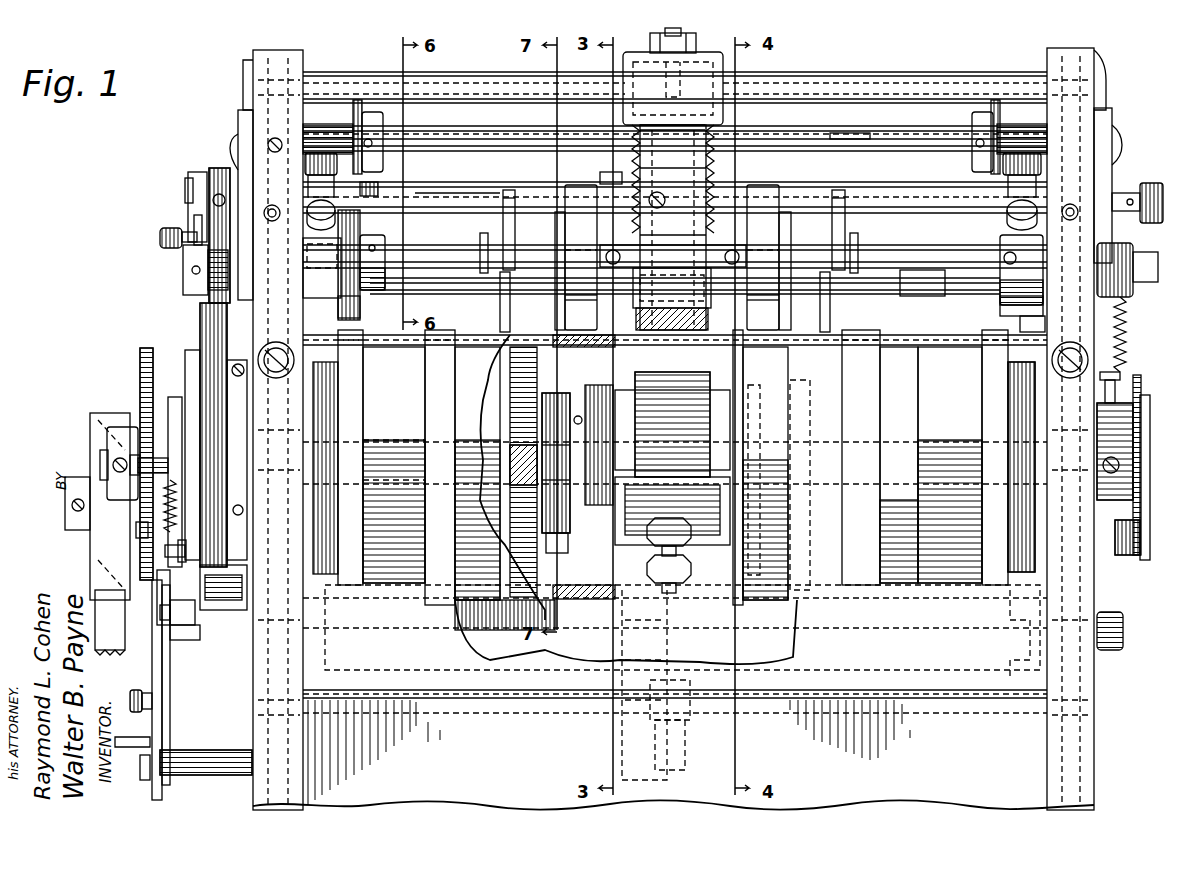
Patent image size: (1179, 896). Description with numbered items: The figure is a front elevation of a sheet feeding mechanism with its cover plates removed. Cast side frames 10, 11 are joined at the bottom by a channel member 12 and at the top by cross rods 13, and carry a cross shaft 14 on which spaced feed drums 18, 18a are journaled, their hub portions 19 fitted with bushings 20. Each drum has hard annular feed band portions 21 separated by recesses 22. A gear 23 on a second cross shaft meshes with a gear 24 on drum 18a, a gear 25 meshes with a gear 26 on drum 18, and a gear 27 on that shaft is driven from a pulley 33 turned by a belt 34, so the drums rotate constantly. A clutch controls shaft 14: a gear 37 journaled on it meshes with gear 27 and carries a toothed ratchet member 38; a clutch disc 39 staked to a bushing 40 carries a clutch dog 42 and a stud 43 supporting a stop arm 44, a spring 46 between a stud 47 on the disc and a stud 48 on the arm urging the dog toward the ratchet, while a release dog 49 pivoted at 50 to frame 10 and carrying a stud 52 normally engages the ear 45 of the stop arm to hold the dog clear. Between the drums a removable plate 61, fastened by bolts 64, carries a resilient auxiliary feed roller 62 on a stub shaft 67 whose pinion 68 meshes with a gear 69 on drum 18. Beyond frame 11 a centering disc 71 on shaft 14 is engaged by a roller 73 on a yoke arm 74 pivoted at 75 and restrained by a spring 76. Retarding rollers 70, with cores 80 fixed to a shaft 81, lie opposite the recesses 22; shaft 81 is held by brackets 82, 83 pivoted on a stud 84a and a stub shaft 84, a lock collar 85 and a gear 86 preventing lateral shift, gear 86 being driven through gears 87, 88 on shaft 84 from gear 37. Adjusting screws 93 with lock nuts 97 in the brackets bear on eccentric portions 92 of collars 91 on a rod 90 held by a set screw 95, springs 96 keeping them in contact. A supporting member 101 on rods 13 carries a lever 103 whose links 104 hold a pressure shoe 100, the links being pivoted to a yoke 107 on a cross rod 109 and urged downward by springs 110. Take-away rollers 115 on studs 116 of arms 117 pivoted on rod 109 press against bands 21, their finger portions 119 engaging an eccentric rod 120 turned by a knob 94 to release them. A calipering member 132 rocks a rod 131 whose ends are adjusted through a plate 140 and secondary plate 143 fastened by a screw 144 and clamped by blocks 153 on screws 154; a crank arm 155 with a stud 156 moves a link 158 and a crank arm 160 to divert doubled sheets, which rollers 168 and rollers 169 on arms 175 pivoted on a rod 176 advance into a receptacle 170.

The side frame 10 is at (253, 62).
The side frame 11 is at (1088, 52).
The channel member 12 is at (673, 726).
The cross rods 13 is at (850, 73).
The cross shaft 14 is at (502, 440).
The feed member 18 is at (394, 465).
The feed member 18a is at (923, 465).
The hub portions 19 is at (800, 412).
The bushings 20 is at (352, 442).
The feed band portions 21 is at (355, 332).
The recesses 22 is at (472, 333).
The gear 23 is at (1010, 638).
The gear 24 is at (1038, 558).
The gear 25 is at (338, 648).
The gear 26 is at (340, 376).
The gear 27 is at (223, 587).
The pulley 33 is at (95, 420).
The belt 34 is at (107, 645).
The gear 37 is at (190, 370).
The toothed ratchet member 38 is at (175, 398).
The clutch disc 39 is at (145, 350).
The bushing 40 is at (118, 428).
The clutch dog 42 is at (239, 460).
The stud 43 is at (136, 530).
The clutch stop arm 44 is at (151, 597).
The ear 45 is at (170, 612).
The spring 46 is at (180, 562).
The stud 47 is at (160, 468).
The stud 48 is at (110, 622).
The clutch release dog 49 is at (170, 648).
The pivot 50 is at (170, 638).
The stud 52 is at (137, 692).
The removable plate 61 is at (708, 542).
The auxiliary friction feed roller 62 is at (648, 397).
The bolts 64 is at (655, 552).
The stub shaft 67 is at (605, 390).
The pinion 68 is at (560, 393).
The gear 69 is at (568, 527).
The retarding rollers 70 is at (672, 257).
The centering disc 71 is at (1133, 500).
The roller 73 is at (1125, 558).
The yoke arm 74 is at (1150, 510).
The pivot 75 is at (1130, 404).
The spring 76 is at (1124, 330).
The cores 80 is at (557, 232).
The shaft 81 is at (902, 246).
The adjustable bracket 82 is at (1003, 300).
The adjustable bracket 83 is at (322, 268).
The stub shaft 84 is at (400, 282).
The stud 84a is at (1027, 322).
The lock collar 85 is at (998, 232).
The gear 86 is at (386, 232).
The gear 87 is at (362, 302).
The gear 88 is at (215, 168).
The rod 90 is at (890, 130).
The collars 91 is at (385, 126).
The eccentric portions 92 is at (312, 126).
The adjusting screws 93 is at (310, 228).
The knob 94 is at (1150, 182).
The set screw 95 is at (268, 142).
The spring 96 is at (358, 104).
The lock nuts 97 is at (370, 186).
The shoe 100 is at (686, 320).
The supporting member 101 is at (724, 66).
The lever 103 is at (740, 112).
The links 104 is at (630, 165).
The yoke member 107 is at (673, 276).
The cross rod 109 is at (922, 292).
The springs 110 is at (620, 132).
The take-away rollers 115 is at (505, 318).
The studs 116 is at (480, 298).
The arms 117 is at (500, 232).
The finger portion 119 is at (508, 190).
The rod 120 is at (920, 206).
The rod 131 is at (445, 192).
The calipering member 132 is at (600, 178).
The plate 140 is at (240, 148).
The secondary plate 143 is at (245, 90).
The screw 144 is at (228, 172).
The blocks 153 is at (190, 292).
The screws 154 is at (183, 268).
The crank arm 155 is at (195, 240).
The stud 156 is at (168, 250).
The link 158 is at (195, 230).
The crank arm 160 is at (200, 326).
The rollers 168 is at (700, 660).
The rollers 169 is at (692, 756).
The receptacle 170 is at (669, 752).
The arm 175 is at (645, 752).
The rod 176 is at (535, 714).